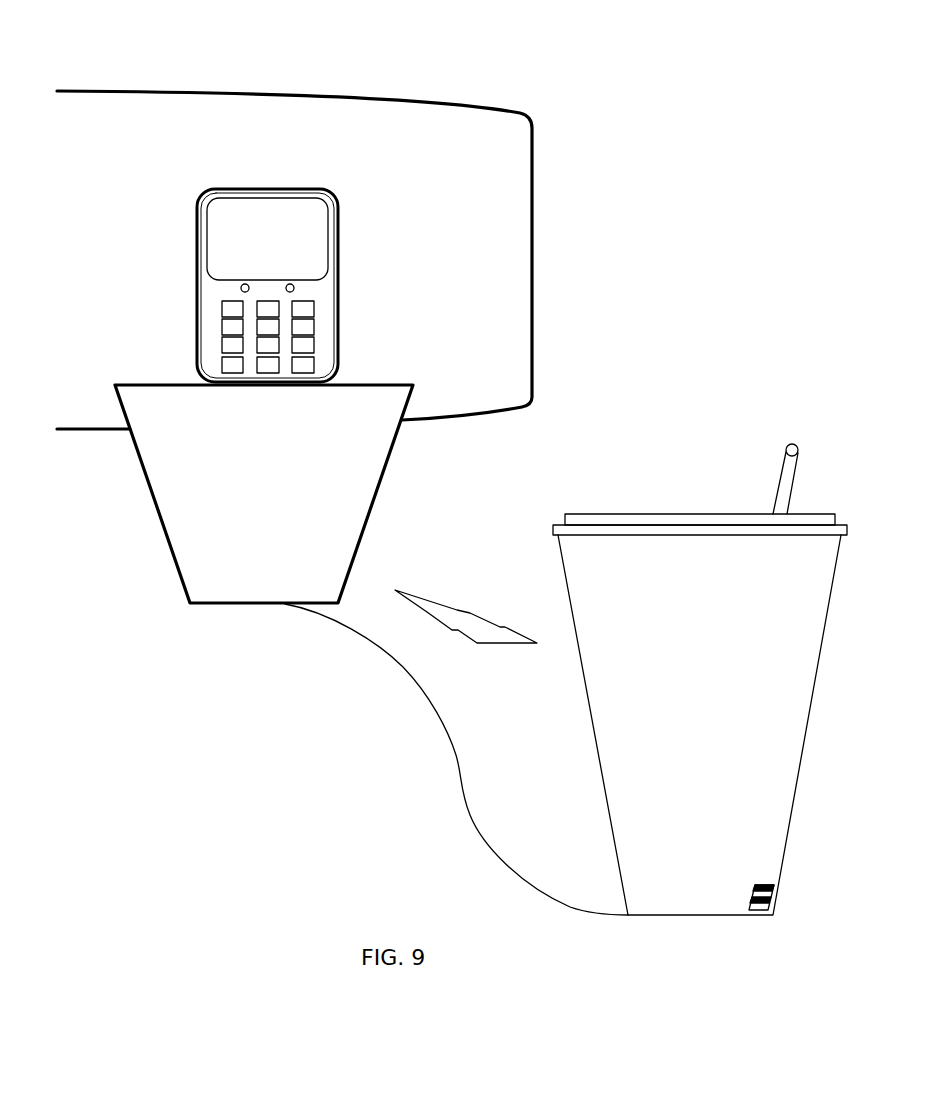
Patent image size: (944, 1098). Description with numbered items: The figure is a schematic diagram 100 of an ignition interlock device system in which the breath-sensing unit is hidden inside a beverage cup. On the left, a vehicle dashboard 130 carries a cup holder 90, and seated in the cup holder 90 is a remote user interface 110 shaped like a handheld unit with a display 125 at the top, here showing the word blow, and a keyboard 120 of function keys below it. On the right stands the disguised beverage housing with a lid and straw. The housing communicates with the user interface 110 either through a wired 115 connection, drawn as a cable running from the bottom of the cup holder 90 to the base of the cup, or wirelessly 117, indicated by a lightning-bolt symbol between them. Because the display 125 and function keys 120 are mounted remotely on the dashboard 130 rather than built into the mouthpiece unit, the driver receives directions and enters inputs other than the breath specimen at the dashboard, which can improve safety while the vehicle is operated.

The cup holder 90 is at (183, 548).
The schematic diagram 100 is at (627, 512).
The user interface 110 is at (272, 280).
The wired connection 115 is at (490, 840).
The wireless connection 117 is at (453, 612).
The keyboard 120 is at (225, 327).
The display 125 is at (207, 247).
The vehicle dashboard 130 is at (190, 130).